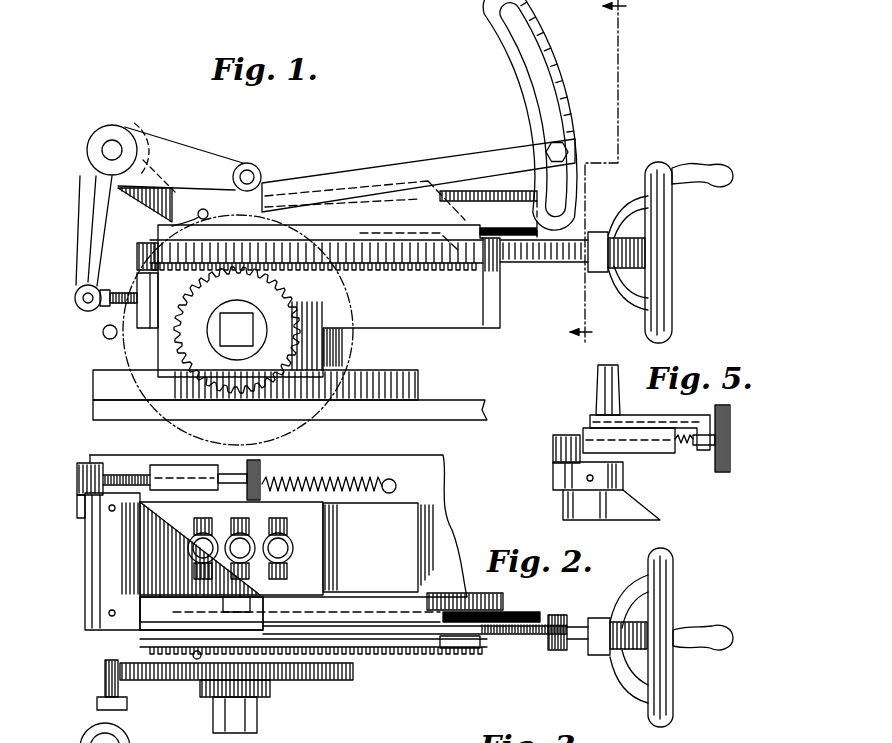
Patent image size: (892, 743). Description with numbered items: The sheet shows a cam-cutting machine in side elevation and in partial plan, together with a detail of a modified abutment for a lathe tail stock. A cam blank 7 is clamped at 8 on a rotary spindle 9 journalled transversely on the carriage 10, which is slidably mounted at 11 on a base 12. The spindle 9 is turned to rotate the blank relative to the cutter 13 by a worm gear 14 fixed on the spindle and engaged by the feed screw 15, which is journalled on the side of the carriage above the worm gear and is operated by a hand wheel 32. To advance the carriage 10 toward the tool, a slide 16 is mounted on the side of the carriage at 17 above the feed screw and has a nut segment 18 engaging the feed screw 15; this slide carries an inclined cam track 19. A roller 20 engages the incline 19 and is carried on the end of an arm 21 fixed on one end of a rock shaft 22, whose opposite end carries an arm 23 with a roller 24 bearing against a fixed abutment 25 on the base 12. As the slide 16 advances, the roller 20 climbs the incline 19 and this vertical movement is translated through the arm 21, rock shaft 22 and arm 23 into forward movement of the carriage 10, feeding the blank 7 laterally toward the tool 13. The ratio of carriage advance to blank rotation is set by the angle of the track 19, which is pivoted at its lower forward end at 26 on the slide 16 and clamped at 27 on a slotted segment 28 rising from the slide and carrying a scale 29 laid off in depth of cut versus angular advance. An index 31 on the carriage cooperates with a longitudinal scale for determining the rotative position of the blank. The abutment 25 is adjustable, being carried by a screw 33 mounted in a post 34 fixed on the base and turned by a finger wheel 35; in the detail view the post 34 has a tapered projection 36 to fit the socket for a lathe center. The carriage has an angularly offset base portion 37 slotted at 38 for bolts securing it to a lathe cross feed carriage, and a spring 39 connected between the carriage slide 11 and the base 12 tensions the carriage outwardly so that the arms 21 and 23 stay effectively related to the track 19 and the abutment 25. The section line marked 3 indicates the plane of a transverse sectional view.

In FIG. 1, the section line 3- 3 is at (606, 171).
In FIG. 1, the cam blank 7 is at (124, 352).
In FIG. 1, the clamp 8 is at (258, 340).
In FIG. 2, the clamp 8 is at (270, 689).
In FIG. 1, the rotary spindle 9 is at (220, 327).
In FIG. 2, the rotary spindle 9 is at (257, 727).
In FIG. 1, the carriage 10 is at (447, 315).
In FIG. 2, the carriage 10 is at (378, 600).
In FIG. 1, the carriage slide 11 is at (385, 378).
In FIG. 2, the carriage slide 11 is at (402, 508).
In FIG. 1, the base 12 is at (438, 403).
In FIG. 2, the base 12 is at (451, 523).
In FIG. 1, the cutter 13 is at (104, 337).
In FIG. 2, the cutter 13 is at (107, 660).
In FIG. 1, the worm gear 14 is at (295, 310).
In FIG. 2, the worm gear 14 is at (236, 671).
In FIG. 1, the feed screw 15 is at (374, 272).
In FIG. 2, the feed screw 15 is at (376, 654).
In FIG. 1, the slide 16 is at (490, 205).
In FIG. 2, the slide 16 is at (500, 612).
In FIG. 1, the slide mounting 17 is at (527, 237).
In FIG. 2, the slide mounting 17 is at (534, 621).
In FIG. 1, the nut segment 18 is at (440, 228).
In FIG. 2, the nut segment 18 is at (447, 652).
In FIG. 1, the inclined cam track 19 is at (389, 170).
In FIG. 1, the roller 20 is at (250, 163).
In FIG. 2, the roller 20 is at (263, 630).
In FIG. 1, the arm 21 is at (178, 146).
In FIG. 1, the rock shaft 22 is at (116, 140).
In FIG. 2, the rock shaft 22 is at (100, 548).
In FIG. 1, the arm 23 is at (86, 218).
In FIG. 5, the arm 23 is at (552, 475).
In FIG. 2, the arm 23 is at (78, 511).
In FIG. 1, the roller 24 is at (82, 278).
In FIG. 5, the roller 24 is at (556, 446).
In FIG. 2, the roller 24 is at (78, 481).
In FIG. 1, the fixed abutment 25 is at (88, 312).
In FIG. 5, the fixed abutment 25 is at (605, 436).
In FIG. 2, the fixed abutment 25 is at (105, 470).
In FIG. 1, the pivot 26 is at (205, 208).
In FIG. 2, the pivot 26 is at (196, 659).
In FIG. 1, the clamp 27 is at (570, 143).
In FIG. 2, the clamp 27 is at (572, 645).
In FIG. 1, the slotted segment 28 is at (548, 50).
In FIG. 2, the slotted segment 28 is at (568, 627).
In FIG. 1, the scale 29 is at (553, 80).
In FIG. 2, the index 31 is at (225, 598).
In FIG. 1, the hand wheel 32 is at (672, 243).
In FIG. 2, the hand wheel 32 is at (672, 584).
In FIG. 2, the screw 33 is at (143, 487).
In FIG. 5, the post 34 is at (640, 417).
In FIG. 2, the post 34 is at (165, 465).
In FIG. 5, the finger wheel 35 is at (732, 425).
In FIG. 2, the finger wheel 35 is at (260, 462).
In FIG. 5, the tapered projection 36 is at (597, 386).
In FIG. 2, the offset base portion 37 is at (312, 539).
In FIG. 2, the slots 38 is at (250, 520).
In FIG. 2, the spring 39 is at (315, 478).